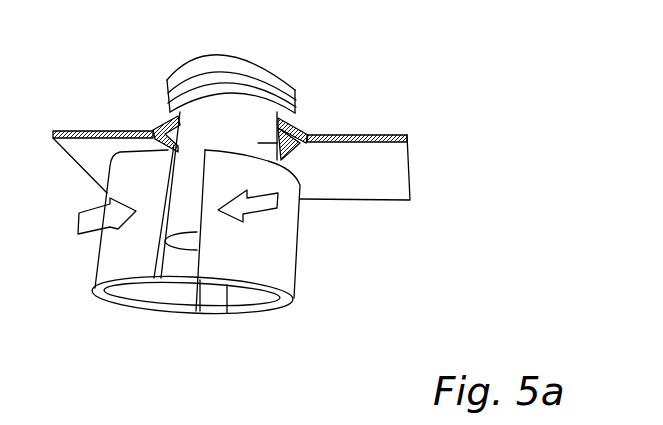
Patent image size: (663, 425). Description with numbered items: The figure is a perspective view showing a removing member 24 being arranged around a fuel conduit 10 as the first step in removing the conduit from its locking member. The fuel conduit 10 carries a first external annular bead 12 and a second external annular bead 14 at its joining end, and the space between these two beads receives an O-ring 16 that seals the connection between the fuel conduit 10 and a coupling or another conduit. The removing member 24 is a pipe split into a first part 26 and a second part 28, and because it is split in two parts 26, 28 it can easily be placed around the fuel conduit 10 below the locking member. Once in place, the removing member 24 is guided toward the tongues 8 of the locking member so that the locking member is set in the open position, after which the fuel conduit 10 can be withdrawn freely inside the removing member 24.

The tongues 8 is at (168, 119).
The fuel conduit 10 is at (304, 127).
The first external annular bead 12 is at (263, 70).
The second external annular bead 14 is at (217, 92).
The O-ring 16 is at (228, 73).
The removing member 24 is at (325, 254).
The first part 26 is at (143, 313).
The second part 28 is at (273, 313).